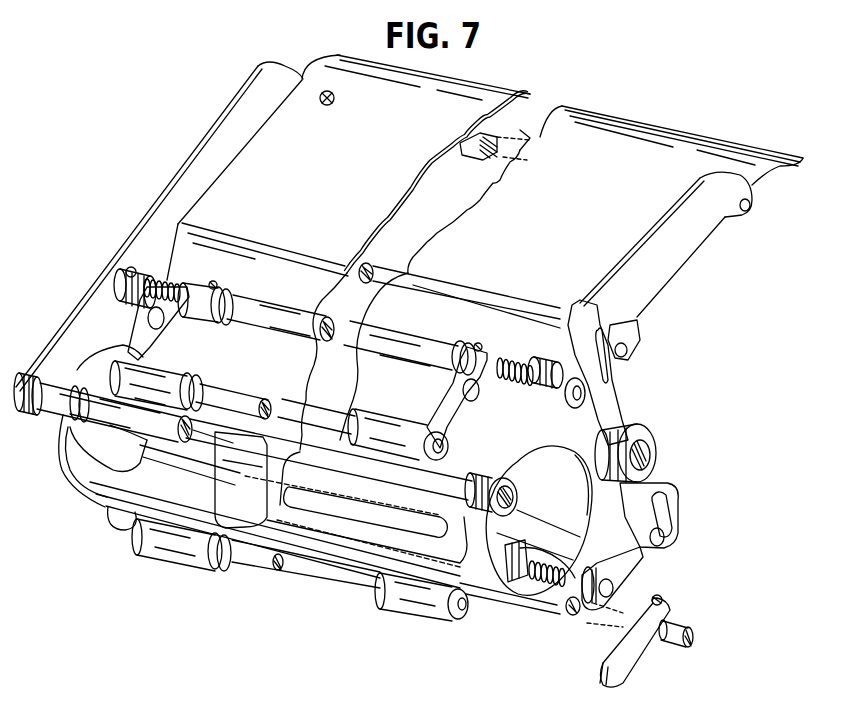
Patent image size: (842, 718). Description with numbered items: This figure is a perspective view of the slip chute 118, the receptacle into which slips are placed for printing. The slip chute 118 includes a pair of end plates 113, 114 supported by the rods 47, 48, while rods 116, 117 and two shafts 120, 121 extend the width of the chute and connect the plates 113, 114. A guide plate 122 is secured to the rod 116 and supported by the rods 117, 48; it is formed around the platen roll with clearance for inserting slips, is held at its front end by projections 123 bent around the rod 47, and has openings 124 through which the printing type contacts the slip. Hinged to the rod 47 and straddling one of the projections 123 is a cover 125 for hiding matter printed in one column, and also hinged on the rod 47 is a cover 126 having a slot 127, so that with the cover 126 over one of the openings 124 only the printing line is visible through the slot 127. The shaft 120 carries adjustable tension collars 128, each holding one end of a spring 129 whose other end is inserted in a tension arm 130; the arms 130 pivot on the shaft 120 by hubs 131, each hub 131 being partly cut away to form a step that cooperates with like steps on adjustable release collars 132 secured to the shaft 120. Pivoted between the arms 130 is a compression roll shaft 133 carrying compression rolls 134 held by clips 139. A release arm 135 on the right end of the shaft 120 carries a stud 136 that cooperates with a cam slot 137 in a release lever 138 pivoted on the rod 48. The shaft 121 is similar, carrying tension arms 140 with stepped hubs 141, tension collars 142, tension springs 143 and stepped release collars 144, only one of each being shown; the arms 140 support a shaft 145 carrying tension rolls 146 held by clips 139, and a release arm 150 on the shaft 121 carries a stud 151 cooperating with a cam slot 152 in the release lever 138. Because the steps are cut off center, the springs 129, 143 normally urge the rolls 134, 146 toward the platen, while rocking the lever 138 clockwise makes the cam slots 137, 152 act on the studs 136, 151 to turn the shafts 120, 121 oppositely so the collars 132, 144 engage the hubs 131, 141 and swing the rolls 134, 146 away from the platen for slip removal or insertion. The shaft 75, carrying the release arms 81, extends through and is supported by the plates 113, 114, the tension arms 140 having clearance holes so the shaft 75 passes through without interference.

The end plate 113 is at (190, 168).
The end plate 114 is at (672, 277).
The rod 116 is at (488, 135).
The rod 117 is at (370, 266).
The slip chute 118 is at (480, 100).
The shaft 120 is at (408, 344).
The shaft 121 is at (616, 588).
The guide plate 122 is at (755, 180).
The projections 123 is at (53, 418).
The openings 124 is at (87, 482).
The cover 125 is at (215, 488).
The cover 126 is at (318, 535).
The slot 127 is at (362, 504).
The adjustable tension collars 128 is at (128, 296).
The springs 129 is at (166, 290).
The tension arms 130 is at (172, 318).
The hub 131 is at (213, 285).
The adjustable release collars 132 is at (250, 290).
The compression roll shaft 133 is at (244, 394).
The compression rolls 134 is at (120, 375).
The release arm 135 is at (580, 404).
The stud 136 is at (626, 350).
The cam slot 137 is at (600, 335).
The release lever 138 is at (580, 300).
The clips 139 is at (197, 378).
The tension arms 140 is at (480, 609).
The stepped hub 141 is at (528, 542).
The tension collars 142 is at (532, 600).
The tension springs 143 is at (555, 548).
The stepped release collars 144 is at (516, 550).
The shaft 145 is at (360, 585).
The tension rolls 146 is at (168, 556).
The release arm 150 is at (655, 562).
The stud 151 is at (670, 532).
The cam slot 152 is at (672, 497).
The rod 47 is at (510, 494).
The rod 48 is at (648, 455).
The shaft 75 is at (700, 628).
The release arms 81 is at (645, 665).